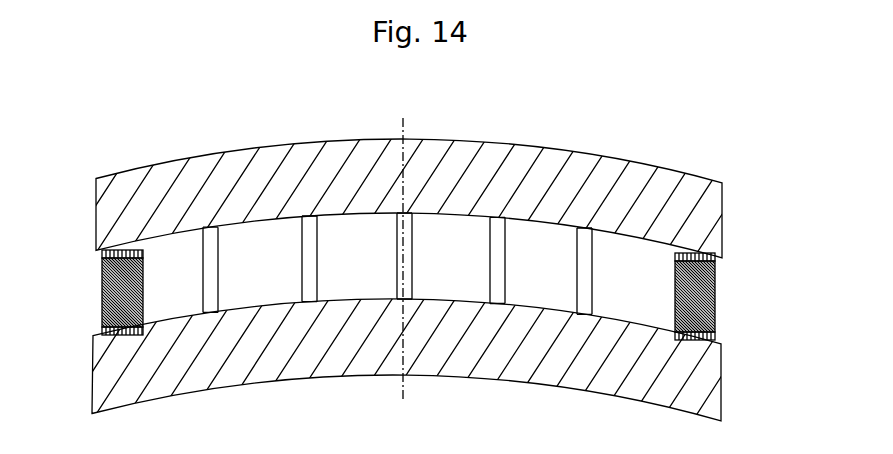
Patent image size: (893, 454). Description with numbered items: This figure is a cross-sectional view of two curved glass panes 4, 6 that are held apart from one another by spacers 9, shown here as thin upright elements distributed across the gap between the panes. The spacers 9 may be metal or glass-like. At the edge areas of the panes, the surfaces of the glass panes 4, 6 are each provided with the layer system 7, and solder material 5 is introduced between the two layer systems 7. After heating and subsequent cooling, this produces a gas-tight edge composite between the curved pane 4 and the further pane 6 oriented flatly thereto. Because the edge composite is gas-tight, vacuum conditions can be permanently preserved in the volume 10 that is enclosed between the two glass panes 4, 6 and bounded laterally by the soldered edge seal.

The glass pane 4 is at (712, 210).
The glass pane 6 is at (708, 382).
The solder material 5 is at (102, 296).
The layer system 7 is at (102, 260).
The spacers 9 is at (228, 247).
The volume 10 is at (458, 247).